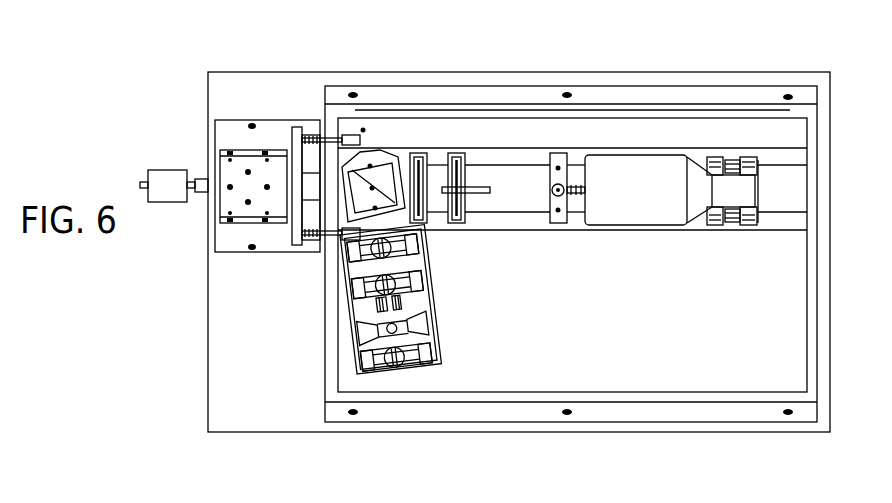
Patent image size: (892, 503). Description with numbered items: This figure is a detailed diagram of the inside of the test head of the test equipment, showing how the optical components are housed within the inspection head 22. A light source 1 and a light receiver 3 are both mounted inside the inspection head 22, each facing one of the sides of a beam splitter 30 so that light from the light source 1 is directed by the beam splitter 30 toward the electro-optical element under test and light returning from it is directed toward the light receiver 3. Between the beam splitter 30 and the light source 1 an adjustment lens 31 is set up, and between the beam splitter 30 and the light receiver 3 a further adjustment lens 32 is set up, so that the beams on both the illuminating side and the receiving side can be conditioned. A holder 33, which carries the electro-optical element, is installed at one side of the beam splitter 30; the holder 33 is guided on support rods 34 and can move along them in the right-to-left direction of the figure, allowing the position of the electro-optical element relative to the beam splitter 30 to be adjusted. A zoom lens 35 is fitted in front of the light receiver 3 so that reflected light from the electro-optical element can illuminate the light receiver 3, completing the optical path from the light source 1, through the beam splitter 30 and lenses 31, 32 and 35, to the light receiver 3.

The inspection head 22 is at (567, 72).
The holder 33 is at (298, 127).
The support rods 34 is at (327, 138).
The beam splitter 30 is at (388, 163).
The adjustment lens 32 is at (428, 153).
The zoom lens 35 is at (640, 196).
The light receiver 3 is at (735, 194).
The adjustment lens 31 is at (405, 257).
The light source 1 is at (407, 363).